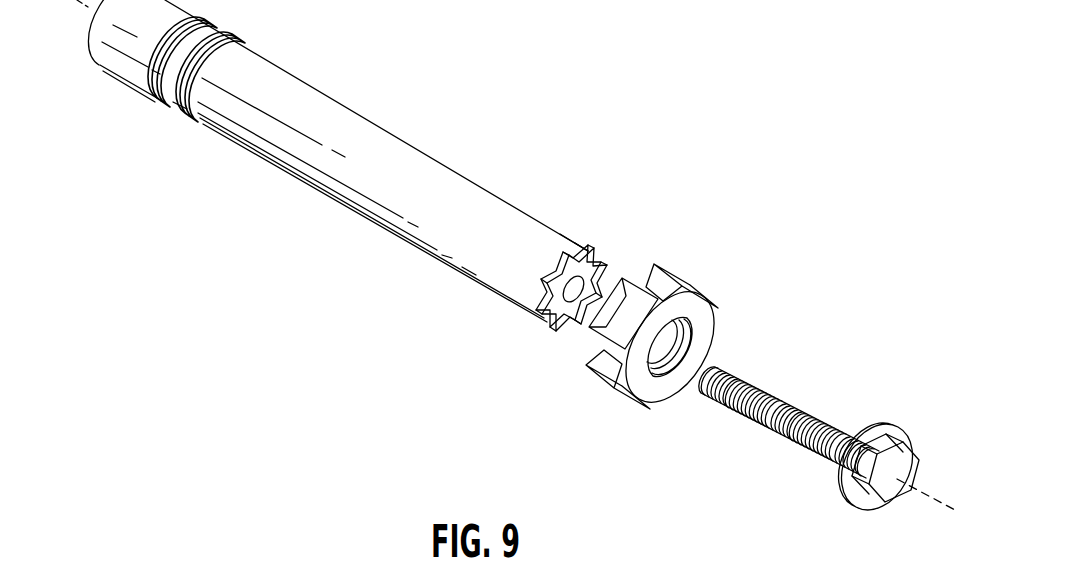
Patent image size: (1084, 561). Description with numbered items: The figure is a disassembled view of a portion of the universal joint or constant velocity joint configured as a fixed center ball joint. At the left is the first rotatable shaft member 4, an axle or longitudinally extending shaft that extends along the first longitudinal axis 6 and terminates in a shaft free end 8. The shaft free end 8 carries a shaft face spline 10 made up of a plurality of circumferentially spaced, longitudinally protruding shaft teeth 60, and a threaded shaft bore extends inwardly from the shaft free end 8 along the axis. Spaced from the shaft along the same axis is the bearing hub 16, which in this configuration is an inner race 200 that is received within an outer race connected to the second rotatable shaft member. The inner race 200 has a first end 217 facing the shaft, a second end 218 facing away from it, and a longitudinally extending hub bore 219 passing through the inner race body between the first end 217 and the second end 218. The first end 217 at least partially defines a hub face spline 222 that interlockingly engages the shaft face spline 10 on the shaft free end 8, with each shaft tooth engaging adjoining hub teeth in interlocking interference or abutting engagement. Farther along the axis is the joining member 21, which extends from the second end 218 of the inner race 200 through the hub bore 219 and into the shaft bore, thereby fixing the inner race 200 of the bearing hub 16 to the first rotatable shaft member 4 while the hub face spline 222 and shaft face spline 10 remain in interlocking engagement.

The first rotatable shaft member 4 is at (396, 106).
The first longitudinal axis 6 is at (930, 510).
The shaft free end 8 is at (591, 250).
The shaft face spline 10 is at (600, 236).
The bearing hub 16 is at (716, 314).
The joining member 21 is at (827, 453).
The shaft teeth 60 is at (542, 340).
The inner race 200 is at (694, 336).
The first end 217 is at (641, 284).
The second end 218 is at (703, 330).
The hub bore 219 is at (701, 342).
The hub face spline 222 is at (677, 387).